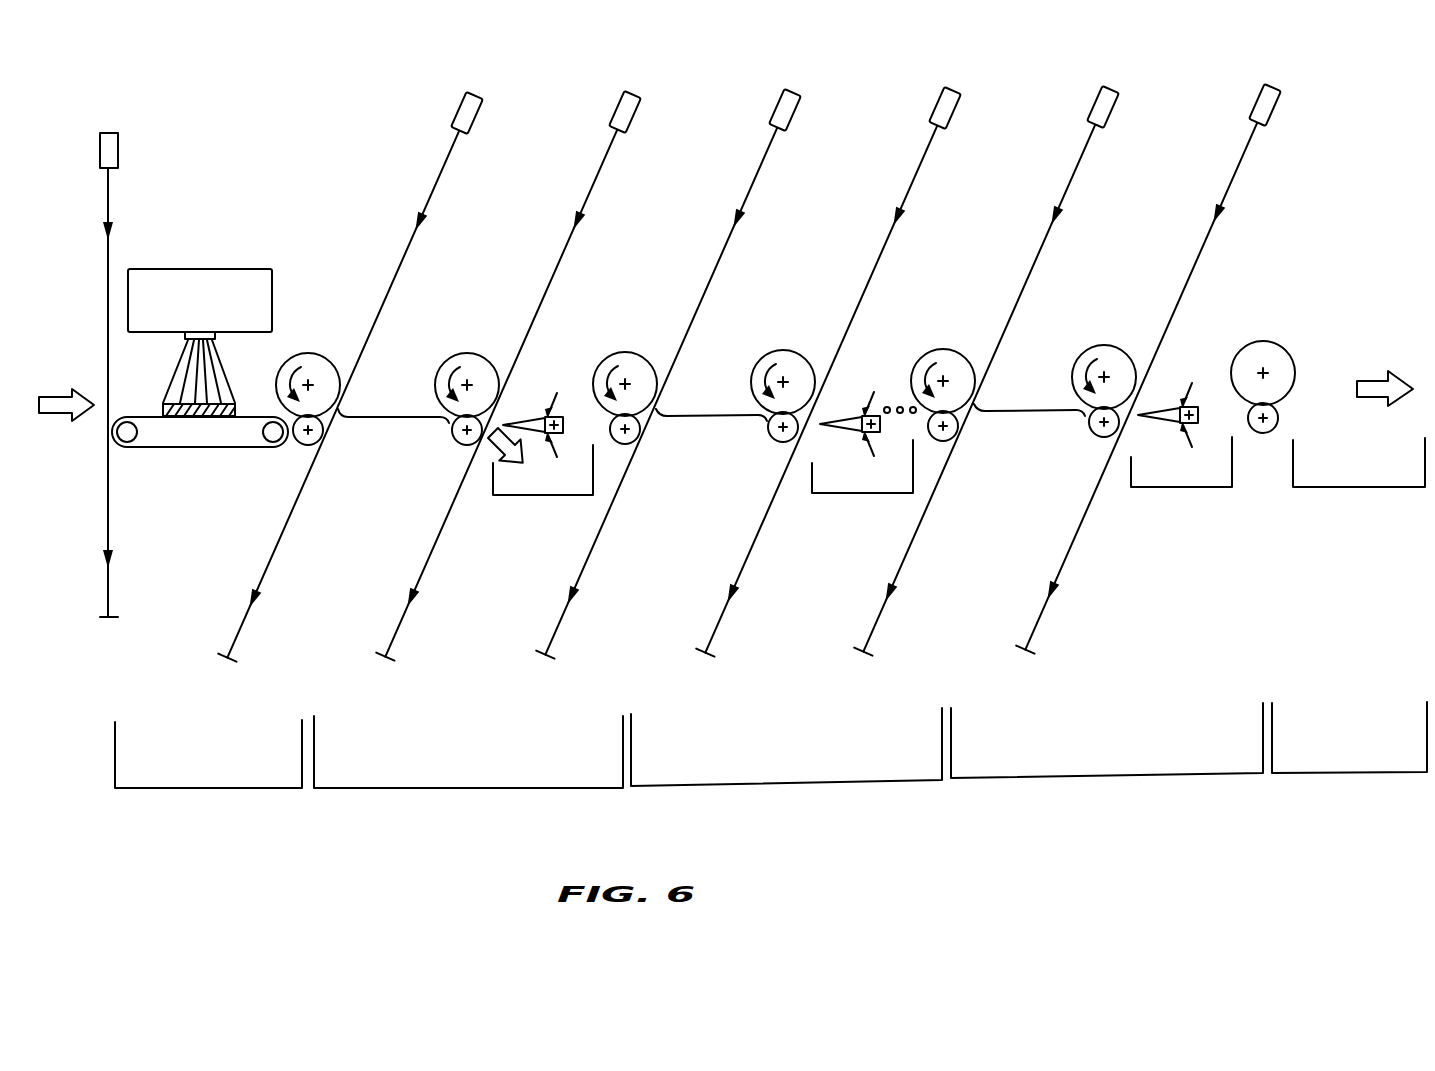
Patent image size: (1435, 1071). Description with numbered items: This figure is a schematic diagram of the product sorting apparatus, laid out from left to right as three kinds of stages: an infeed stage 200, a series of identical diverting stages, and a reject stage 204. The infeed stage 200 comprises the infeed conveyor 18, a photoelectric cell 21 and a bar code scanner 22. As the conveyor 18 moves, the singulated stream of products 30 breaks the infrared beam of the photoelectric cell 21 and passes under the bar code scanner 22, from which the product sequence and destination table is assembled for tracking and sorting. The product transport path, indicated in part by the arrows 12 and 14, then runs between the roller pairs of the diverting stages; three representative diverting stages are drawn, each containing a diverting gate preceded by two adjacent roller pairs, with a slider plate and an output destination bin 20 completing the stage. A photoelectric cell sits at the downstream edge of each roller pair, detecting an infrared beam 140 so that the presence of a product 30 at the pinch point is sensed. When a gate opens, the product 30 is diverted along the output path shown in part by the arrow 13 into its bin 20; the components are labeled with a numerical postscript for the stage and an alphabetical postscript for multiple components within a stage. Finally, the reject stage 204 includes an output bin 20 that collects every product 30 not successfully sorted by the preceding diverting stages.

The arrow 12 is at (80, 392).
The arrow 13 is at (520, 454).
The arrow 14 is at (1390, 380).
The infeed conveyor 18 is at (120, 447).
The output bin 20 is at (1322, 487).
The photoelectric cell 21 is at (108, 133).
The bar code scanner 22 is at (190, 269).
The product 30 is at (163, 406).
The infrared beam 140 is at (426, 200).
The infeed stage 200 is at (208, 787).
The reject stage 204 is at (1345, 771).